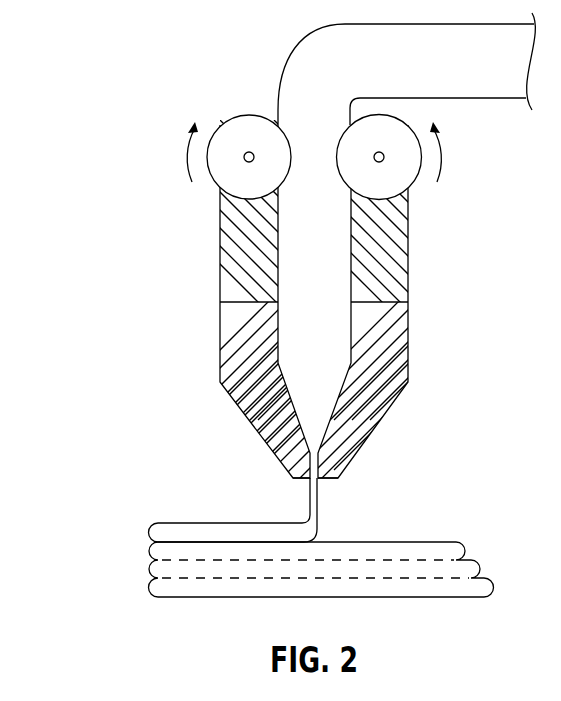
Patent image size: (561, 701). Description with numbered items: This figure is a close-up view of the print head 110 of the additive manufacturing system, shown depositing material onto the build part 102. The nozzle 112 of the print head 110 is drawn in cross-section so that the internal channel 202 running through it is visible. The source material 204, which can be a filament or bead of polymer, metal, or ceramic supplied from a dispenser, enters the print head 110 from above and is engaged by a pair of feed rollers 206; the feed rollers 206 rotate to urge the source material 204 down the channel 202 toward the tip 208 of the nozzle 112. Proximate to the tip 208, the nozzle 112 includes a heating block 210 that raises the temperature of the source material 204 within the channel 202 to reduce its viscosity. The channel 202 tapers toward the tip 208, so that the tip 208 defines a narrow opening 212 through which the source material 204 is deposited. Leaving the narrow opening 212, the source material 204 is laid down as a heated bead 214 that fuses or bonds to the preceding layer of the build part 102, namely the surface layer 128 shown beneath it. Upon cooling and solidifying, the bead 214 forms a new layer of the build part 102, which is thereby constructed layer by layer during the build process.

The print head 110 is at (301, 266).
The build part 102 is at (260, 537).
The source material 204 is at (340, 72).
The feed rollers 206 is at (238, 132).
The internal channel 202 is at (280, 252).
The nozzle 112 is at (220, 347).
The heating block 210 is at (380, 362).
The tip 208 is at (307, 478).
The narrow opening 212 is at (324, 488).
The heated bead 214 is at (242, 532).
The surface layer 128 is at (408, 548).